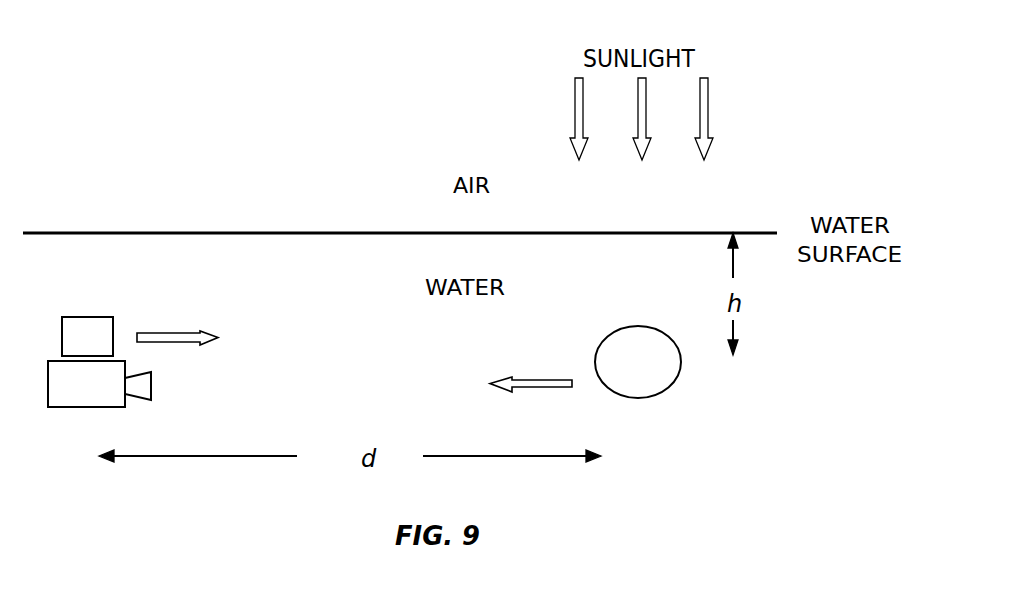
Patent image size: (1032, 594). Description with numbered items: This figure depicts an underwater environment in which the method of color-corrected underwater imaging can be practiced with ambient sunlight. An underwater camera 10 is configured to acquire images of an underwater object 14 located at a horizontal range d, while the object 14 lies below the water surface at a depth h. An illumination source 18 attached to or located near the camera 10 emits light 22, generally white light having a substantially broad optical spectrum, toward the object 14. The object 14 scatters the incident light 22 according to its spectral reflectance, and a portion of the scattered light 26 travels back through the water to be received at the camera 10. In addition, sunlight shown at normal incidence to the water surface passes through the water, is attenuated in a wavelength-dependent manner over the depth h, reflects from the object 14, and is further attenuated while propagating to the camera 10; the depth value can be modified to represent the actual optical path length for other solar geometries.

The underwater camera 10 is at (101, 400).
The illumination source 18 is at (101, 353).
The light 22 is at (162, 333).
The scattered light 26 is at (538, 378).
The underwater object 14 is at (649, 375).